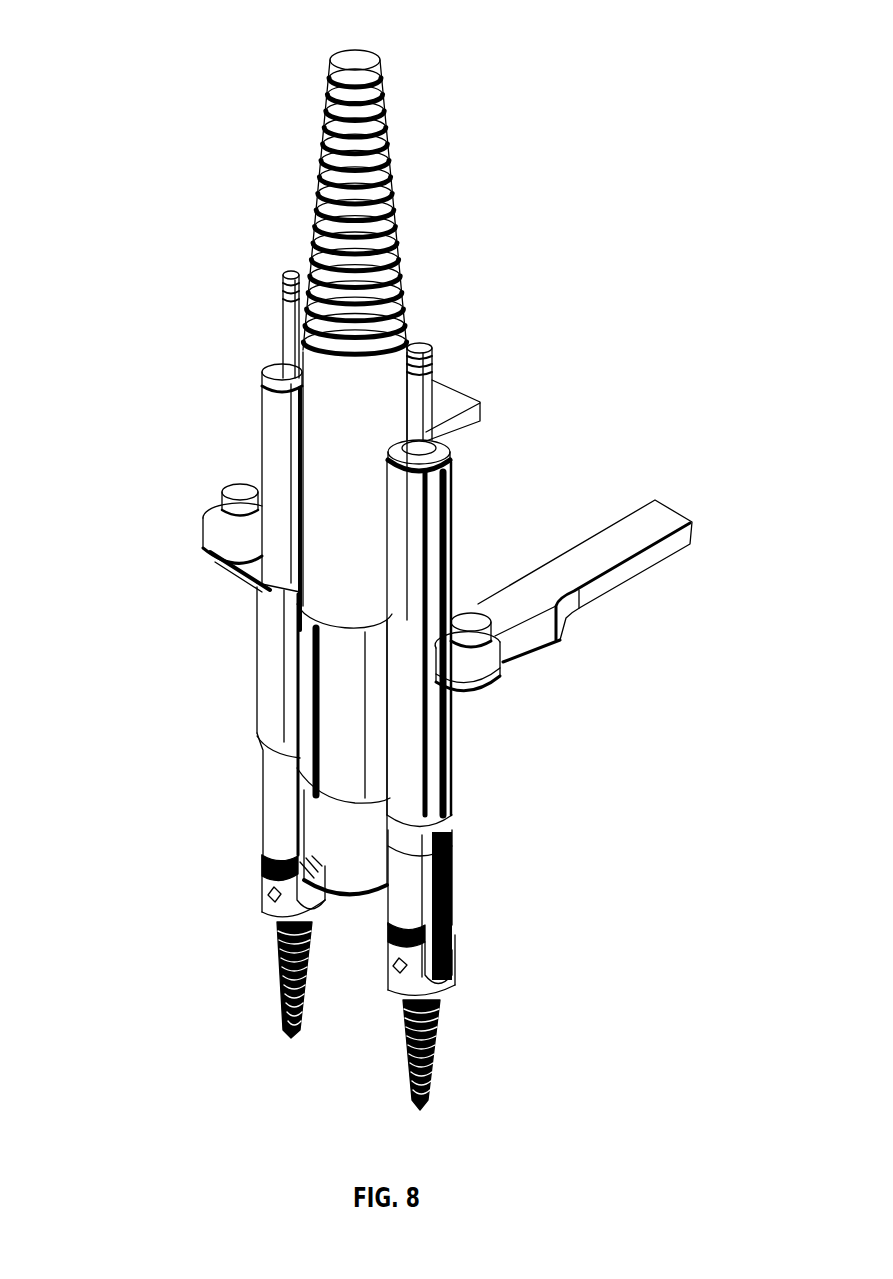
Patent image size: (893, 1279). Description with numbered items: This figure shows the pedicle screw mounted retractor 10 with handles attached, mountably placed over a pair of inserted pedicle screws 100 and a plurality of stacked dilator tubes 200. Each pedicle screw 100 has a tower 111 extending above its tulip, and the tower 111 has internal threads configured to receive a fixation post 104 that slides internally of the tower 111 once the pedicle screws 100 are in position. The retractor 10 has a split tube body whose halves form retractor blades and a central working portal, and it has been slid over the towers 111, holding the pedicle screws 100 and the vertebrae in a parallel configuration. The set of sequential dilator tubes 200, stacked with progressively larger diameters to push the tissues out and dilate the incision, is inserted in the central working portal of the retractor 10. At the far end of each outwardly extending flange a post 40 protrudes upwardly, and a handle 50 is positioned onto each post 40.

The stacked sequential dilator tubes 200 is at (318, 197).
The fixation post 104 is at (283, 315).
The tower 111 is at (258, 452).
The pedicle screw mounted retractor 10 is at (257, 690).
The pedicle screw 100 is at (278, 987).
The post 40 is at (493, 628).
The handle 50 is at (637, 577).